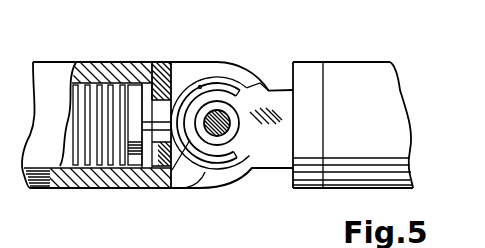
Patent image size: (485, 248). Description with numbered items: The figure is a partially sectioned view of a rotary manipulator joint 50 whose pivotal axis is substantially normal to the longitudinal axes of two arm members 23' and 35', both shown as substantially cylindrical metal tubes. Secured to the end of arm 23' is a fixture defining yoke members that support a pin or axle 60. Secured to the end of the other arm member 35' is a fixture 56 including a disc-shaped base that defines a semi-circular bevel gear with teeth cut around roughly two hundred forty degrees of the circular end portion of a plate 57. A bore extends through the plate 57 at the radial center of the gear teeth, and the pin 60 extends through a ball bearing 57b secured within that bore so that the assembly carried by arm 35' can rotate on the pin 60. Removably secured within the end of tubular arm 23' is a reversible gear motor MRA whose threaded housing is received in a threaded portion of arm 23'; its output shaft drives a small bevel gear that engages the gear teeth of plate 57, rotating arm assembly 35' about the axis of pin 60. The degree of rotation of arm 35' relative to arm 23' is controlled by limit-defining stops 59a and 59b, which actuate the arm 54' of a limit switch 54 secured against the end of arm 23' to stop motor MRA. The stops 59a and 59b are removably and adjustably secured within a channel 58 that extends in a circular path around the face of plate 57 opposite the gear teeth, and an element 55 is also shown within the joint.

The arm member 23' is at (119, 106).
The reversible gear motor MRA is at (134, 90).
The end plate 55 is at (162, 63).
The limit stop 59a is at (201, 86).
The limit stop 59b is at (242, 167).
The plate 57 is at (229, 114).
The ball bearing 57b is at (228, 117).
The pin 60 is at (246, 87).
The channel 58 is at (260, 83).
The fixture 56 is at (325, 89).
The arm member 35' is at (374, 102).
The limit switch 54 is at (102, 194).
The limit switch arm 54' is at (196, 180).
The rotary joint 50 is at (238, 200).